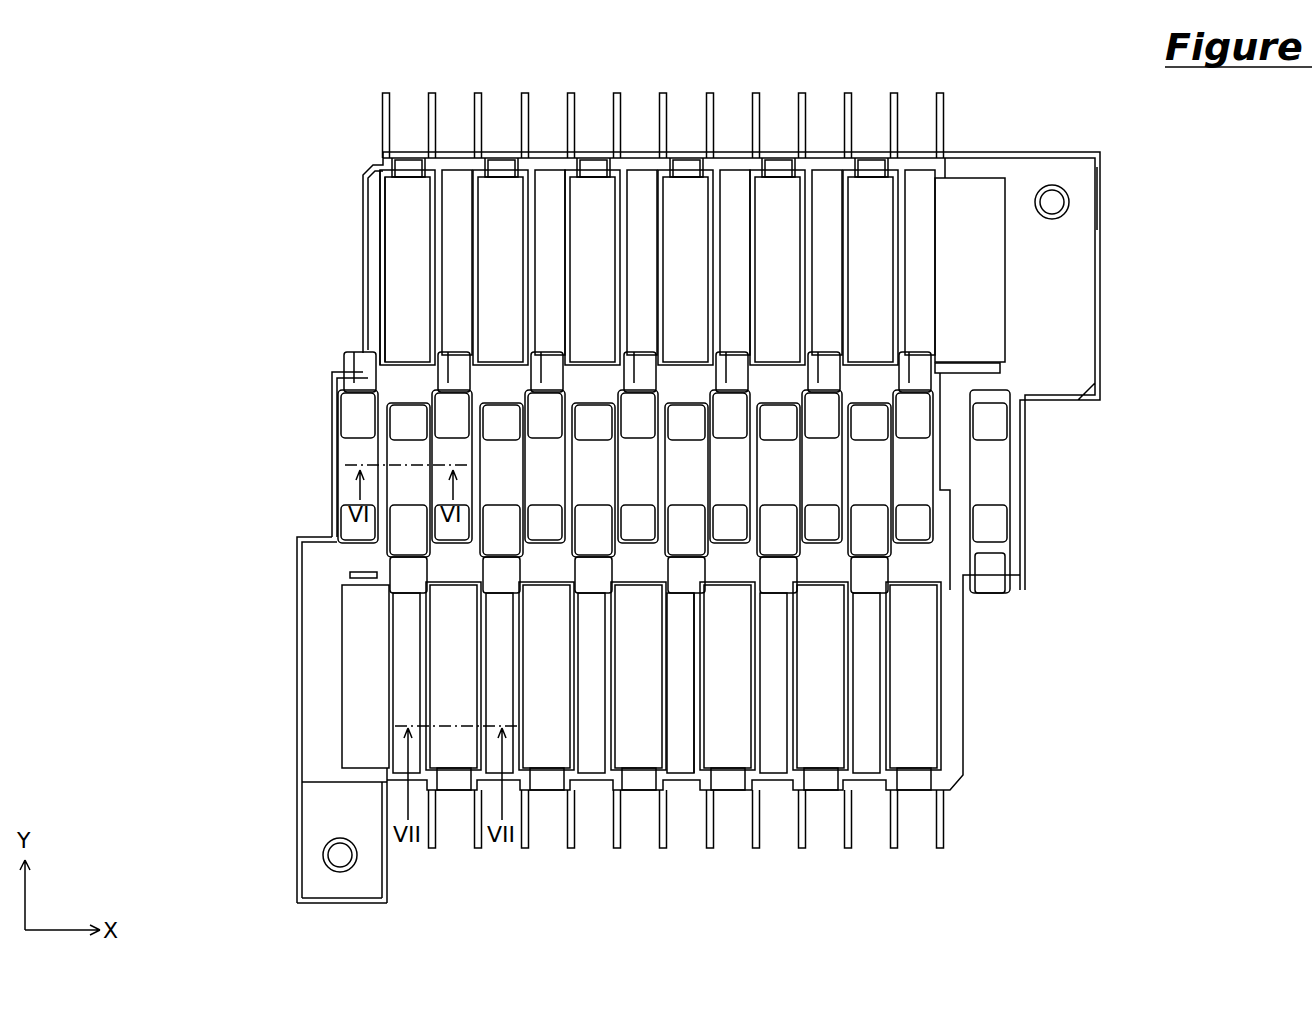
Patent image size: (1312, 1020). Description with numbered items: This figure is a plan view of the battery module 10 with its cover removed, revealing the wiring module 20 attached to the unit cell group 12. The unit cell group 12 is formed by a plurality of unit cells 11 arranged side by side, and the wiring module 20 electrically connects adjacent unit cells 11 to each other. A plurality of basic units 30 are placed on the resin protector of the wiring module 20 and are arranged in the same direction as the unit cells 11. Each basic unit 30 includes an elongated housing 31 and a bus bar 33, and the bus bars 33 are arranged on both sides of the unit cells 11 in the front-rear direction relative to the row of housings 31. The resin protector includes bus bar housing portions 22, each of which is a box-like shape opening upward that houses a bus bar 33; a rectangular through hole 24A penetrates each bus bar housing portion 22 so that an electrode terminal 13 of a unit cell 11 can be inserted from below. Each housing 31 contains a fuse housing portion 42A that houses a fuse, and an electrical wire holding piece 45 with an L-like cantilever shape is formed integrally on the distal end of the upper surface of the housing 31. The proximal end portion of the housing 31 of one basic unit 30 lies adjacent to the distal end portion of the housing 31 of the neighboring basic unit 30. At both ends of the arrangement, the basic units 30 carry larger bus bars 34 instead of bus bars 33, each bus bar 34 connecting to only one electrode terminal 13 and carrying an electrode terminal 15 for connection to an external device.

The battery module 10 is at (1015, 100).
The unit cell 11 is at (432, 852).
The unit cell group 12 is at (805, 873).
The electrode terminal 13 is at (490, 205).
The electrode terminal 15 is at (1062, 202).
The wiring module 20 is at (998, 725).
The bus bar housing portion 22 is at (440, 320).
The through hole 24A is at (385, 250).
The basic unit 30 is at (340, 493).
The housing 31 is at (455, 455).
The bus bar 33 is at (405, 165).
The bus bar 34 is at (1075, 305).
The fuse housing portion 42A is at (693, 720).
The electrical wire holding piece 45 is at (455, 425).